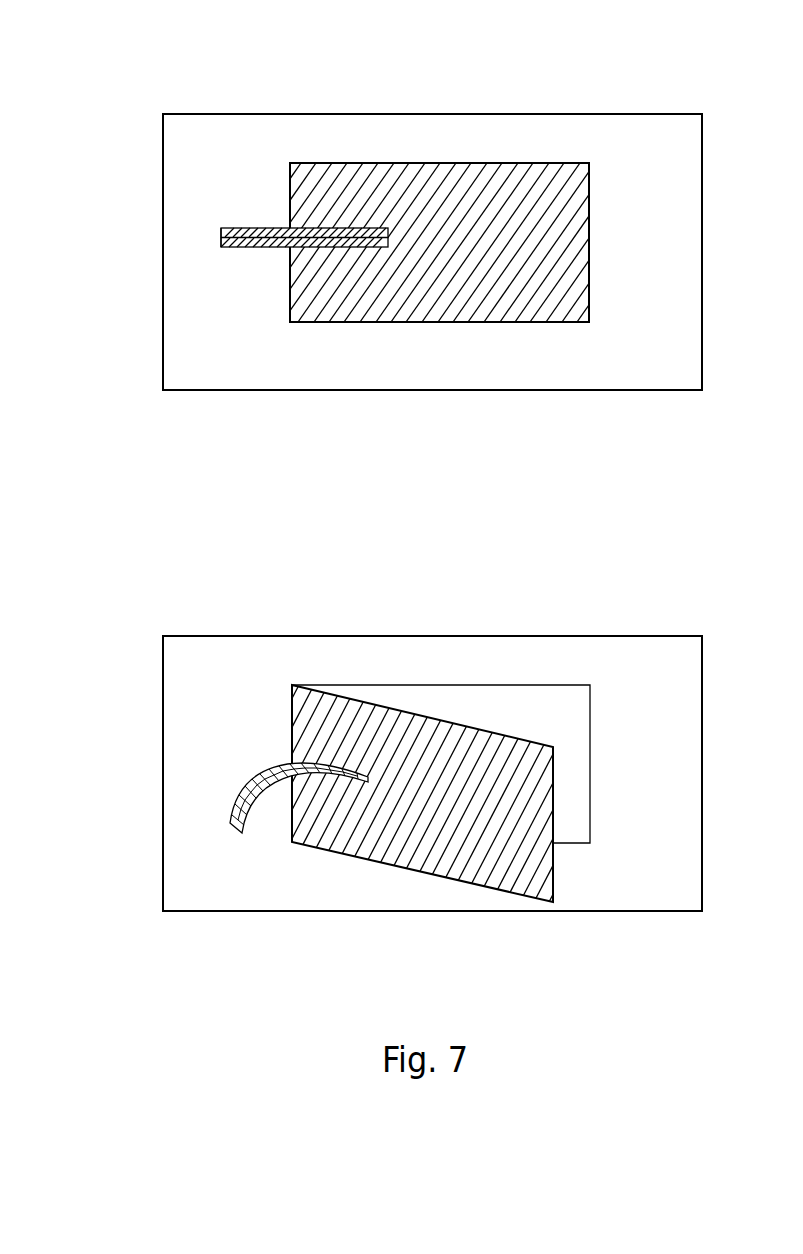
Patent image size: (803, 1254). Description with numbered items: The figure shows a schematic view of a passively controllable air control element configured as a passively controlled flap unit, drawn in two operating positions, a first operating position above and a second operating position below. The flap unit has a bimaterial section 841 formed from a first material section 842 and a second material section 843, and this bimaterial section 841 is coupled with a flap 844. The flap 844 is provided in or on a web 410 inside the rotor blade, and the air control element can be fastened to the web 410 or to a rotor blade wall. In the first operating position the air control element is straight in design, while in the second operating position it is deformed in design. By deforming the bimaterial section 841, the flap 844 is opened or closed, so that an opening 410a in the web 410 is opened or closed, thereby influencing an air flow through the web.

The web 410 is at (441, 122).
The opening 410a is at (553, 725).
The bimaterial section 841 is at (213, 234).
The first material section 842 is at (255, 228).
The second material section 843 is at (232, 247).
The flap 844 is at (514, 248).